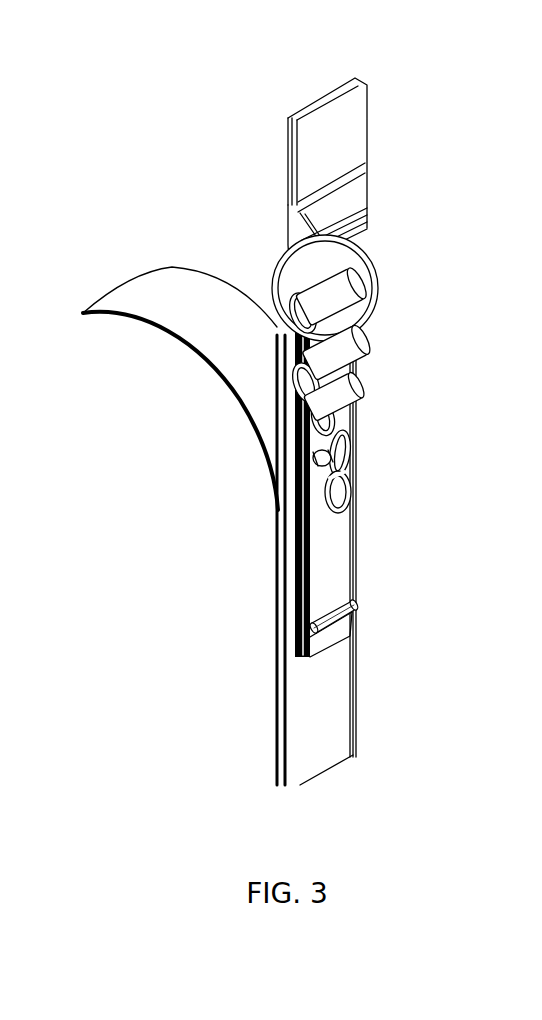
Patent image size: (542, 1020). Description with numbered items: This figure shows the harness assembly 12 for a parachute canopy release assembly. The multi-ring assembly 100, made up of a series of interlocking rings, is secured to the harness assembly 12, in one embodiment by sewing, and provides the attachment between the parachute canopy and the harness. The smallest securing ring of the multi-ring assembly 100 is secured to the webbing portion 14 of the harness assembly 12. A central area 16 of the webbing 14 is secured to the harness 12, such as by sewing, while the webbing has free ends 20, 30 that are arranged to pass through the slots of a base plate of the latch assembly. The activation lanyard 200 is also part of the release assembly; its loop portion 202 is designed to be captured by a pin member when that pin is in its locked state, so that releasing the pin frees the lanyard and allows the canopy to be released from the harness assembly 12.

The multi-ring assembly 100 is at (402, 352).
The activation lanyard 200 is at (338, 454).
The loop portion 202 is at (350, 505).
The free end 20 is at (327, 457).
The harness assembly 12 is at (238, 518).
The central area 16 is at (340, 565).
The free end 30 is at (320, 627).
The webbing portion 14 is at (325, 692).